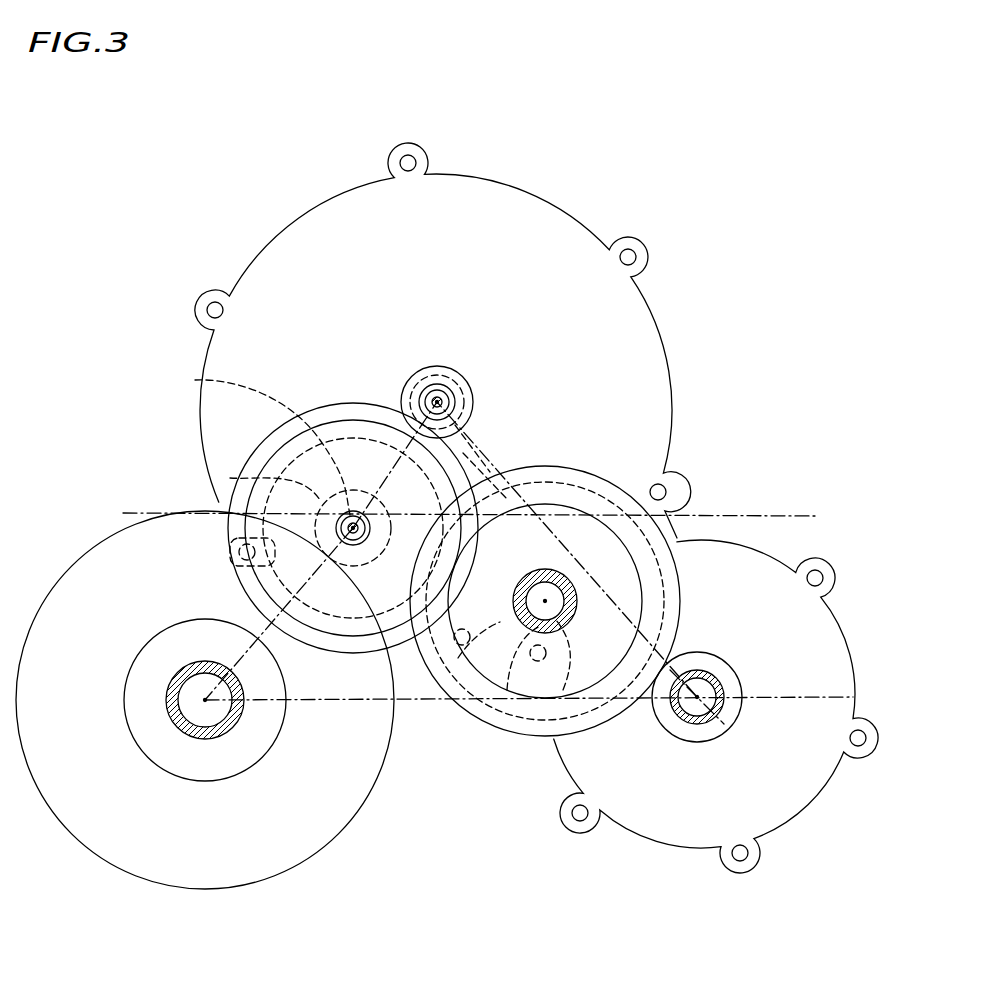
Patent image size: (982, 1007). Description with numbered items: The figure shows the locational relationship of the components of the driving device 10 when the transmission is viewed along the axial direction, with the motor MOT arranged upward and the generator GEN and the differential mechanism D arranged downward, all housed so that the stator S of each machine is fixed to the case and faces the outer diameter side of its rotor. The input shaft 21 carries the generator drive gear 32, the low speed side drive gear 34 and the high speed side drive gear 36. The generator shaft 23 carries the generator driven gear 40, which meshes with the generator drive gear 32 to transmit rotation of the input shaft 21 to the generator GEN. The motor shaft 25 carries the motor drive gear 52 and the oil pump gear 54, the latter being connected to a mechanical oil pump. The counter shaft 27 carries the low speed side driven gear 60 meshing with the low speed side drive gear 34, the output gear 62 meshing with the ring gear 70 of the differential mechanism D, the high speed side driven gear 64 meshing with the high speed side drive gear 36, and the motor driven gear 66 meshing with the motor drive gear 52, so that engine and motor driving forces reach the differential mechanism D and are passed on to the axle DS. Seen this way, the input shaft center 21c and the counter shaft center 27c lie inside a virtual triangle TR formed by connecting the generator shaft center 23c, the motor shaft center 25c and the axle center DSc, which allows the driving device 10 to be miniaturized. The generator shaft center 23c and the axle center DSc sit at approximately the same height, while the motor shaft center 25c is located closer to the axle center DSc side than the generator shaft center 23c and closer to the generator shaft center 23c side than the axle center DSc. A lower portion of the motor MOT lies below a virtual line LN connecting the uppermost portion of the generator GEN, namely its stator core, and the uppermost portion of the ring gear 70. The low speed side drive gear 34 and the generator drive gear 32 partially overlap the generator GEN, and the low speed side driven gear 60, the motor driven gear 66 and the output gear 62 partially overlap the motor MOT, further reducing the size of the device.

The driving device 10 is at (590, 172).
The stator S is at (499, 181).
The motor MOT is at (302, 208).
The generator GEN is at (656, 853).
The virtual triangle TR is at (662, 627).
The virtual line LN is at (816, 515).
The differential mechanism D is at (143, 641).
The axle DS is at (232, 727).
The axle center DSc is at (205, 703).
The input shaft 21 is at (546, 660).
The input shaft center 21c is at (512, 640).
The generator shaft 23 is at (715, 712).
The generator shaft center 23c is at (728, 703).
The motor shaft 25 is at (458, 402).
The motor shaft center 25c is at (478, 406).
The counter shaft 27 is at (355, 493).
The counter shaft center 27c is at (343, 518).
The generator drive gear 32 is at (680, 578).
The low speed side drive gear 34 is at (525, 618).
The high speed side drive gear 36 is at (443, 650).
The generator driven gear 40 is at (738, 675).
The motor drive gear 52 is at (437, 366).
The oil pump gear 54 is at (458, 384).
The low speed side driven gear 60 is at (402, 650).
The output gear 62 is at (350, 512).
The high speed side driven gear 64 is at (462, 452).
The motor driven gear 66 is at (310, 402).
The ring gear 70 is at (108, 538).